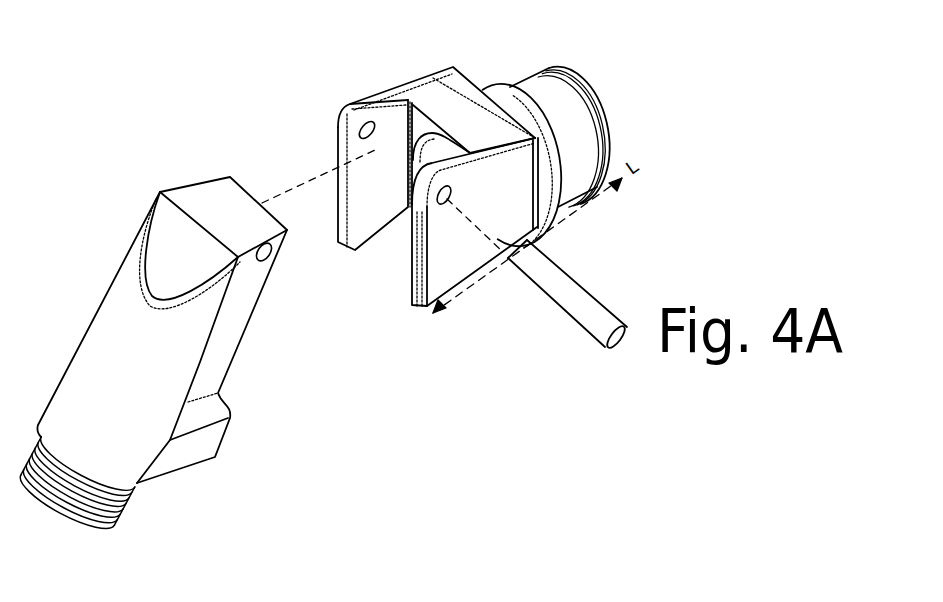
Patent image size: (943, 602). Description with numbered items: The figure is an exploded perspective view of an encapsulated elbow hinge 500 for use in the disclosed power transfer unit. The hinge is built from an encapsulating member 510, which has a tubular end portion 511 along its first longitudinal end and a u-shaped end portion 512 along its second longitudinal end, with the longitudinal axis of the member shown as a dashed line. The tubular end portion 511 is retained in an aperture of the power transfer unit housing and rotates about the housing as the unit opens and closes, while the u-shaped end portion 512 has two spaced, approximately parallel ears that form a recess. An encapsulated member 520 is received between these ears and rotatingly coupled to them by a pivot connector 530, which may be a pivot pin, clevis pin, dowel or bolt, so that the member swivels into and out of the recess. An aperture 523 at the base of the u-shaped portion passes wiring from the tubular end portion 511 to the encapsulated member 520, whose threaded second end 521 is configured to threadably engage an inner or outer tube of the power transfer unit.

The encapsulated elbow hinge 500 is at (225, 65).
The encapsulating member 510 is at (398, 95).
The tubular end portion 511 is at (555, 108).
The u-shaped end portion 512 is at (357, 217).
The encapsulated member 520 is at (102, 302).
The second end 521 is at (88, 530).
The aperture 523 is at (438, 152).
The pivot connector 530 is at (602, 330).